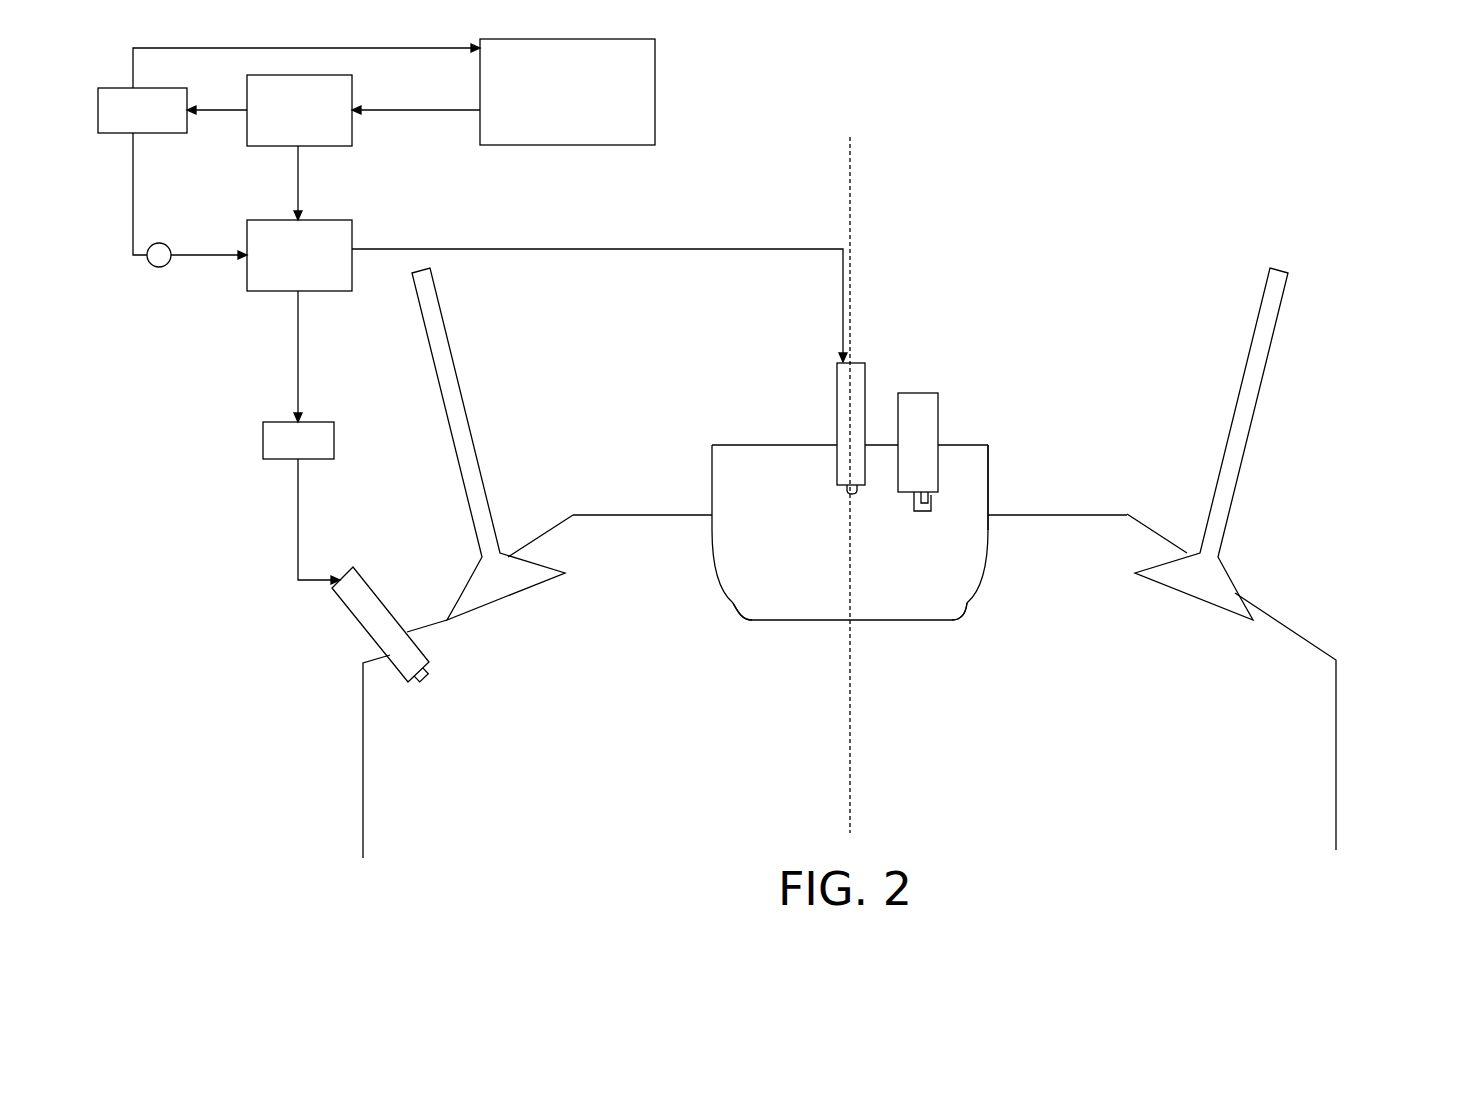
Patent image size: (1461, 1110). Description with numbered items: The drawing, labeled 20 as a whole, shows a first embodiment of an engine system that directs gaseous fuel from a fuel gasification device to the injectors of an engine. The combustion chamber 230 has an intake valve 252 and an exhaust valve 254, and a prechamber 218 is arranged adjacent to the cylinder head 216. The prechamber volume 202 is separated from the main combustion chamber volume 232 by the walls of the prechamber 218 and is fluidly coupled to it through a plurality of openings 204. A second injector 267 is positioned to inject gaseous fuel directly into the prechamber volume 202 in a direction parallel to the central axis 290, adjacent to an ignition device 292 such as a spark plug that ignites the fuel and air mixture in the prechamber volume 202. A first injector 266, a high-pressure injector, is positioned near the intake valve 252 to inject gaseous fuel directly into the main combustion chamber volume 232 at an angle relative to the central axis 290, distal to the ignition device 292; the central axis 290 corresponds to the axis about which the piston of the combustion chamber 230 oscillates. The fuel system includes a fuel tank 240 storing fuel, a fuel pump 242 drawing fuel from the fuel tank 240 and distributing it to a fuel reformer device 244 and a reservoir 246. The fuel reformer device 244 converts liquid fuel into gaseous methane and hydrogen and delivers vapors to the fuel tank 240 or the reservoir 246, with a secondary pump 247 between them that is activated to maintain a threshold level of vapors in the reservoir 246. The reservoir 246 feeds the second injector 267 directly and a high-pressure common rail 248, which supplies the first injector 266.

The engine cylinder 20 is at (1402, 42).
The prechamber volume 202 is at (801, 607).
The openings 204 is at (735, 608).
The cylinder head 216 is at (666, 425).
The prechamber 218 is at (989, 445).
The combustion chamber 230 is at (362, 770).
The main combustion chamber volume 232 is at (623, 780).
The fuel tank 240 is at (550, 104).
The fuel pump 242 is at (282, 122).
The fuel reformer device 244 is at (125, 122).
The reservoir 246 is at (282, 267).
The secondary pump 247 is at (164, 244).
The common rail 248 is at (281, 452).
The intake valve 252 is at (468, 418).
The exhaust valve 254 is at (1232, 420).
The first injector 266 is at (352, 576).
The second injector 267 is at (865, 364).
The central axis 290 is at (852, 190).
The ignition device 292 is at (938, 395).